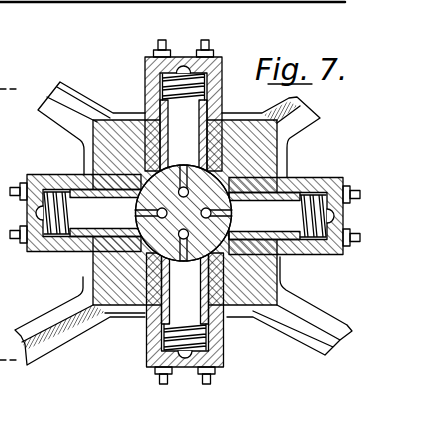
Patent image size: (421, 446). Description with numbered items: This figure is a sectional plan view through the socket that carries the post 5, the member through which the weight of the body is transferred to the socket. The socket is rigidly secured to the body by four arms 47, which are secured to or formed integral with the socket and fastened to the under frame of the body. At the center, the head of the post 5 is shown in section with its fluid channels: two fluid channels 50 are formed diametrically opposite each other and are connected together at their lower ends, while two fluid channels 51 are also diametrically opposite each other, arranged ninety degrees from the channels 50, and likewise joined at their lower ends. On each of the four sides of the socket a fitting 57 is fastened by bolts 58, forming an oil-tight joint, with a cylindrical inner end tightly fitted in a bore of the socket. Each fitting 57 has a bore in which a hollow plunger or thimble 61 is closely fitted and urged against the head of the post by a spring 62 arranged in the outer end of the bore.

The post 5 is at (258, 227).
The arms 47 is at (73, 95).
The fluid channels 50 is at (184, 187).
The fluid channels 51 is at (134, 217).
The fitting 57 is at (221, 94).
The bolts 58 is at (200, 42).
The hollow plunger or thimble 61 is at (160, 115).
The spring 62 is at (146, 73).